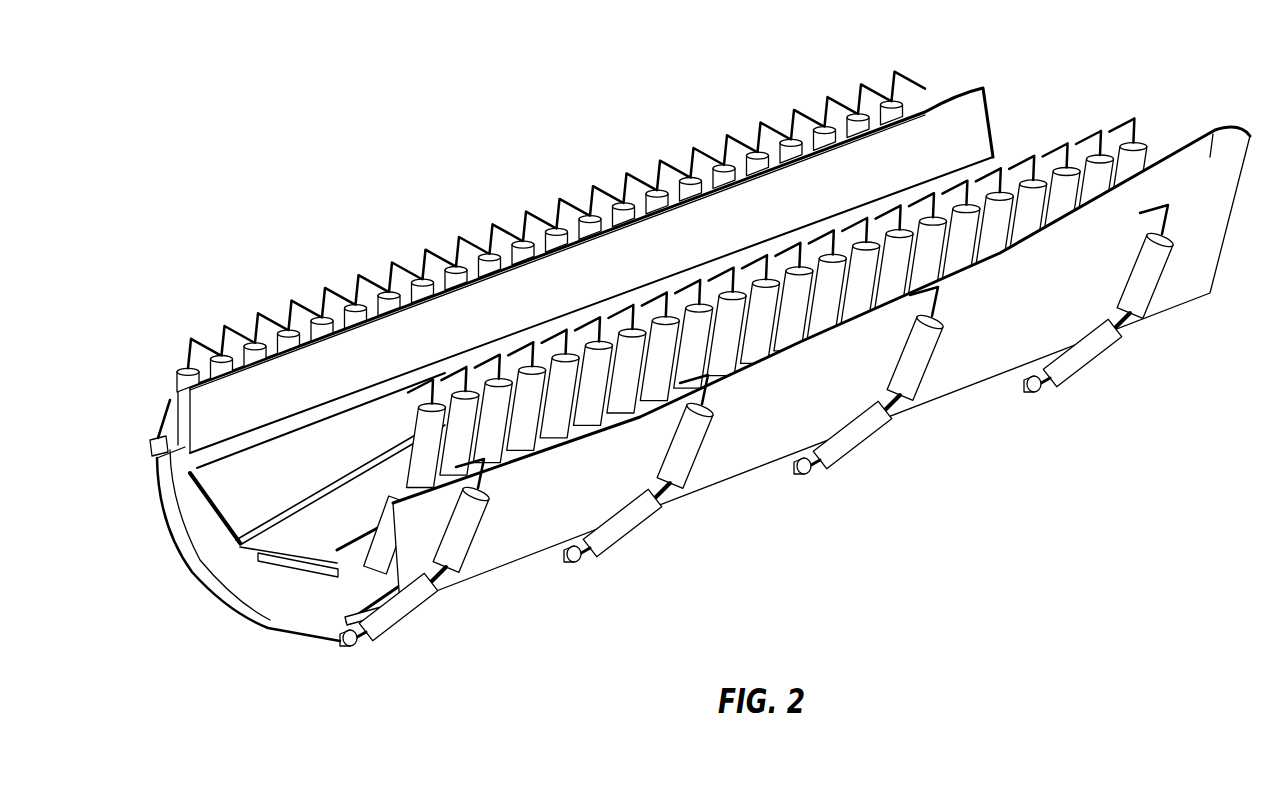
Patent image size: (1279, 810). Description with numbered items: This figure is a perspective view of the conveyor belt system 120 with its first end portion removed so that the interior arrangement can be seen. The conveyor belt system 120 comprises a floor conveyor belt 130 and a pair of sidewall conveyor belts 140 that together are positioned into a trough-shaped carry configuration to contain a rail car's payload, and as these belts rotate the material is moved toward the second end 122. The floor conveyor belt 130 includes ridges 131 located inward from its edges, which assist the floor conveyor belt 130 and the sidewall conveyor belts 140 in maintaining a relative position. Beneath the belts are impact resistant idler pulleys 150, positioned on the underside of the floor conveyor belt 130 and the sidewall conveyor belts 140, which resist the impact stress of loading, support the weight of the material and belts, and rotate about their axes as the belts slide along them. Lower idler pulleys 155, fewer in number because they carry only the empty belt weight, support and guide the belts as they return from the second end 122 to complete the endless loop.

The conveyor belt system 120 is at (287, 186).
The second end 122 is at (967, 122).
The floor conveyor belt 130 is at (227, 607).
The ridges 131 is at (192, 557).
The sidewall conveyor belts 140 is at (210, 430).
The idler pulleys 150 is at (150, 292).
The lower idler pulleys 155 is at (1137, 293).